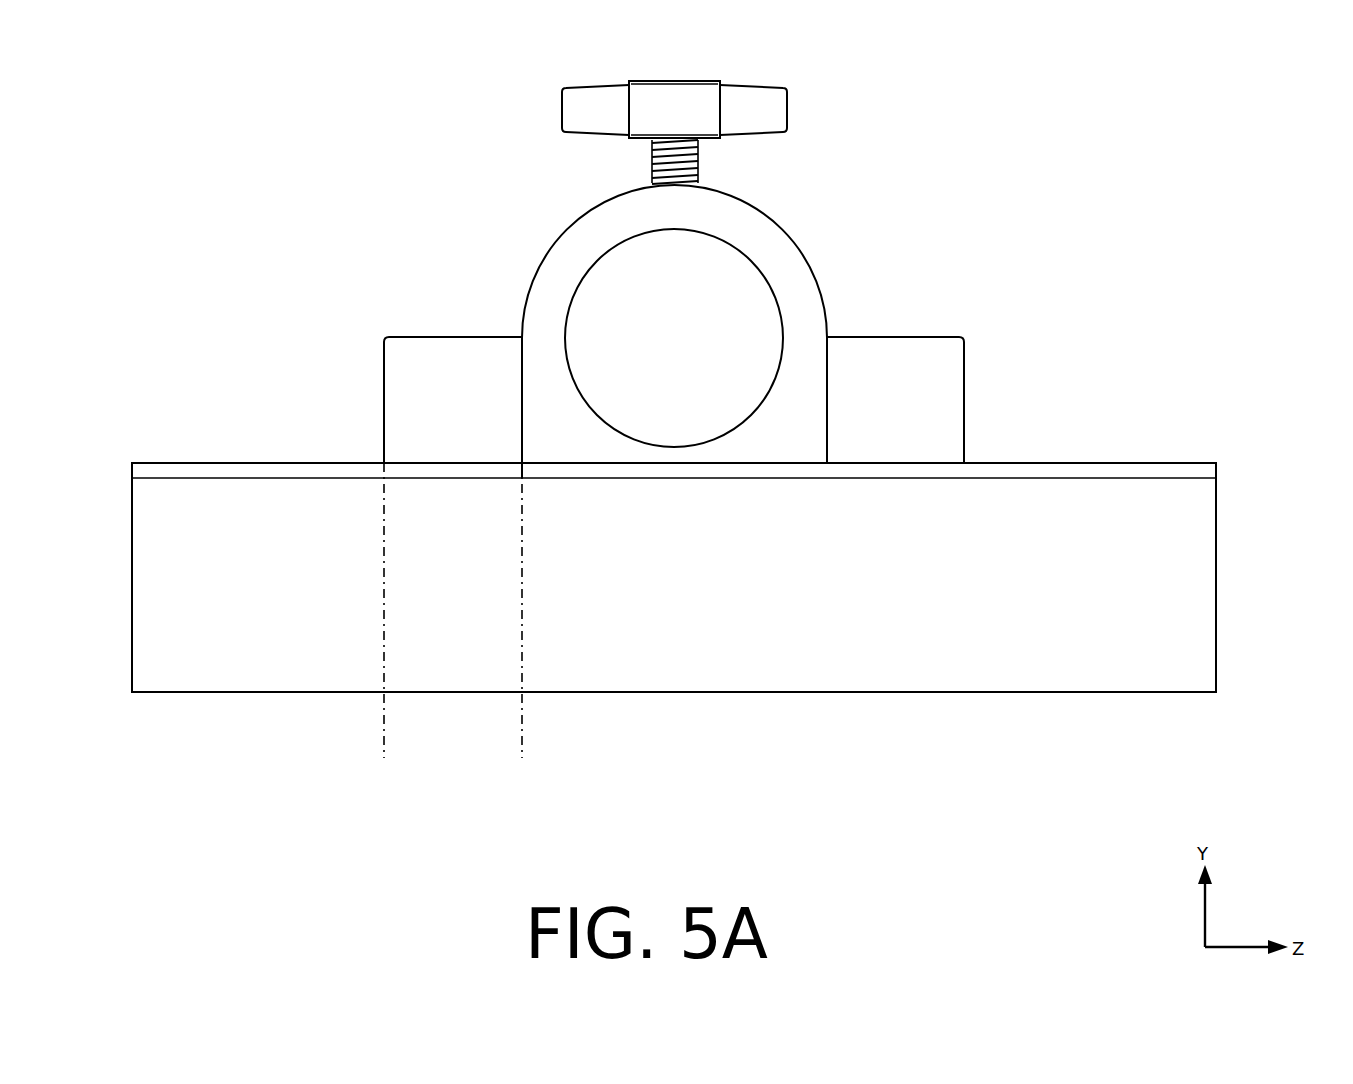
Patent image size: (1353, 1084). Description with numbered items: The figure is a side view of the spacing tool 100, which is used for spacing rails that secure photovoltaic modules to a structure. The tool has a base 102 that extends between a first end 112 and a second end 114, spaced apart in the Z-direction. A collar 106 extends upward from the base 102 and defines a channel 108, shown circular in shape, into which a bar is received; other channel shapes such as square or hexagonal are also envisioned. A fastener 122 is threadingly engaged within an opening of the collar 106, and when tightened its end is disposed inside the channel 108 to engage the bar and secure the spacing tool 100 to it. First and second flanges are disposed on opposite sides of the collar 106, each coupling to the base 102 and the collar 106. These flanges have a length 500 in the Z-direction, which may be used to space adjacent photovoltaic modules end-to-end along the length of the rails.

The spacing tool 100 is at (352, 108).
The base 102 is at (1197, 578).
The collar 106 is at (773, 256).
The channel 108 is at (594, 287).
The first end 112 is at (132, 704).
The second end 114 is at (1216, 702).
The fastener 122 is at (770, 117).
The length 500 is at (520, 724).